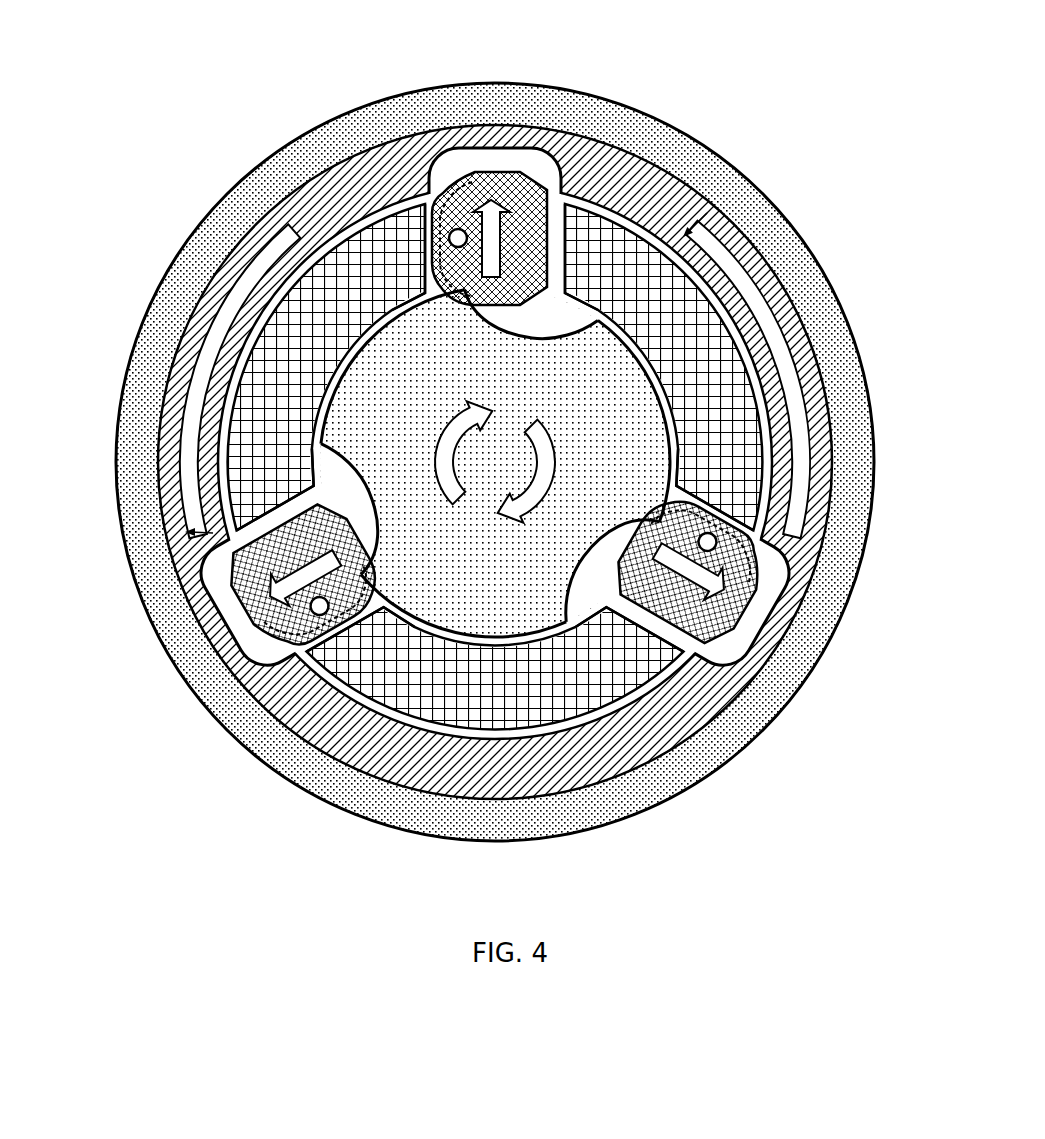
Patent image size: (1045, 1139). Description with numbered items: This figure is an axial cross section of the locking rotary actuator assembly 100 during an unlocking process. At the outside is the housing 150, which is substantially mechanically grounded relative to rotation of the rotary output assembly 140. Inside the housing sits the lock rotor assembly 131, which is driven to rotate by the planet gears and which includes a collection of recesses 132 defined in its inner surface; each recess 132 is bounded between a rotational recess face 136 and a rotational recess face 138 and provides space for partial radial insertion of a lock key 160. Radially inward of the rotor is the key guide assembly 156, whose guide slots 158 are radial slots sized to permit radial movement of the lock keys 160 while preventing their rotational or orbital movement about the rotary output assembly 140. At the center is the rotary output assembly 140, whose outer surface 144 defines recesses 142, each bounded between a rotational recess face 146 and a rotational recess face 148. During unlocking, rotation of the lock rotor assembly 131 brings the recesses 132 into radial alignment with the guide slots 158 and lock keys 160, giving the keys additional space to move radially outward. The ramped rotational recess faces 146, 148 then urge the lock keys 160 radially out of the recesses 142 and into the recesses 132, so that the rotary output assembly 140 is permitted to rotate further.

The locking rotary actuator assembly 100 is at (214, 45).
The lock rotor assembly 131 is at (337, 197).
The recesses 132 is at (456, 157).
The rotational recess face 136 is at (428, 178).
The rotational recess face 138 is at (562, 160).
The rotary output assembly 140 is at (477, 480).
The recesses 142 is at (550, 320).
The outer surface 144 is at (657, 428).
The rotational recess face 146 is at (468, 314).
The rotational recess face 148 is at (335, 442).
The housing 150 is at (472, 117).
The key guide assembly 156 is at (282, 362).
The guide slots 158 is at (553, 200).
The lock keys 160 is at (502, 255).